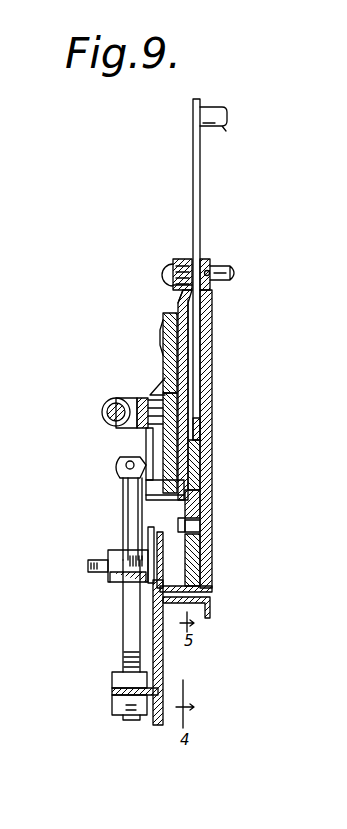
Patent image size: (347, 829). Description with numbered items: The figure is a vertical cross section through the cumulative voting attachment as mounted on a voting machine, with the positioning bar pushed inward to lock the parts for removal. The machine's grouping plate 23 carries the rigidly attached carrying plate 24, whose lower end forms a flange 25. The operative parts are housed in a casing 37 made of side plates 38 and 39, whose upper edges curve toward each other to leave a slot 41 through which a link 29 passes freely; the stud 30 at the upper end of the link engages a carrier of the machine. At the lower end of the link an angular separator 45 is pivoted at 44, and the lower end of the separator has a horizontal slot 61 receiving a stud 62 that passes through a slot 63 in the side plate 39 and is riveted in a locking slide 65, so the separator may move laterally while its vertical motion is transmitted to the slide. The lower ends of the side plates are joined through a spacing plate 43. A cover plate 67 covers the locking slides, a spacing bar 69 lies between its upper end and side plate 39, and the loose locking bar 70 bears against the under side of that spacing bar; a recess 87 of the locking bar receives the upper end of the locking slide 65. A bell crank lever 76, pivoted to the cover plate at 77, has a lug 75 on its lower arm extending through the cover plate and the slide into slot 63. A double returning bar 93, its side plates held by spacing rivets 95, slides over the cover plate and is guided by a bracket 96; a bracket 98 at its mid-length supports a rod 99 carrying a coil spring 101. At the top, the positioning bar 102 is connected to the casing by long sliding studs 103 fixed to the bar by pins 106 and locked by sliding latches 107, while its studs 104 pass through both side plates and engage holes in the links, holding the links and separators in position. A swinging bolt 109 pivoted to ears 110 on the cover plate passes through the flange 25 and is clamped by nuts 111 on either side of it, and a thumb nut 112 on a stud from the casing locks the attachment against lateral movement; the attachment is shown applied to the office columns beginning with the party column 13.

The party column 13 is at (142, 590).
The grouping plate 23 is at (157, 740).
The carrying plate 24 is at (152, 618).
The flange 25 is at (112, 700).
The link 29 is at (201, 218).
The stud 30 is at (223, 127).
The casing 37 is at (252, 373).
The side plate 38 is at (213, 313).
The side plate 39 is at (177, 306).
The slot 41 is at (203, 259).
The spacing plate 43 is at (206, 590).
The pivot 44 is at (203, 423).
The separator 45 is at (205, 520).
The horizontal slot 61 is at (207, 538).
The stud 62 is at (201, 529).
The slot 63 is at (202, 506).
The locking slide 65 is at (158, 548).
The cover plate 67 is at (162, 345).
The spacing bar 69 is at (163, 318).
The locking bar 70 is at (176, 360).
The lug 75 is at (165, 500).
The bell crank lever 76 is at (146, 440).
The pivot 77 is at (122, 480).
The recess 87 is at (201, 446).
The double returning bar 93 is at (145, 395).
The spacing rivet 95 is at (165, 378).
The bracket 96 is at (150, 390).
The bracket 98 is at (114, 424).
The rod 99 is at (106, 408).
The coil spring 101 is at (112, 398).
The positioning bar 102 is at (172, 287).
The sliding stud 103 is at (236, 273).
The stud 104 is at (212, 268).
The pin 106 is at (172, 263).
The sliding latch 107 is at (171, 272).
The swinging bolt 109 is at (122, 650).
The ear 110 is at (125, 466).
The nut 111 is at (112, 682).
The thumb nut 112 is at (110, 567).